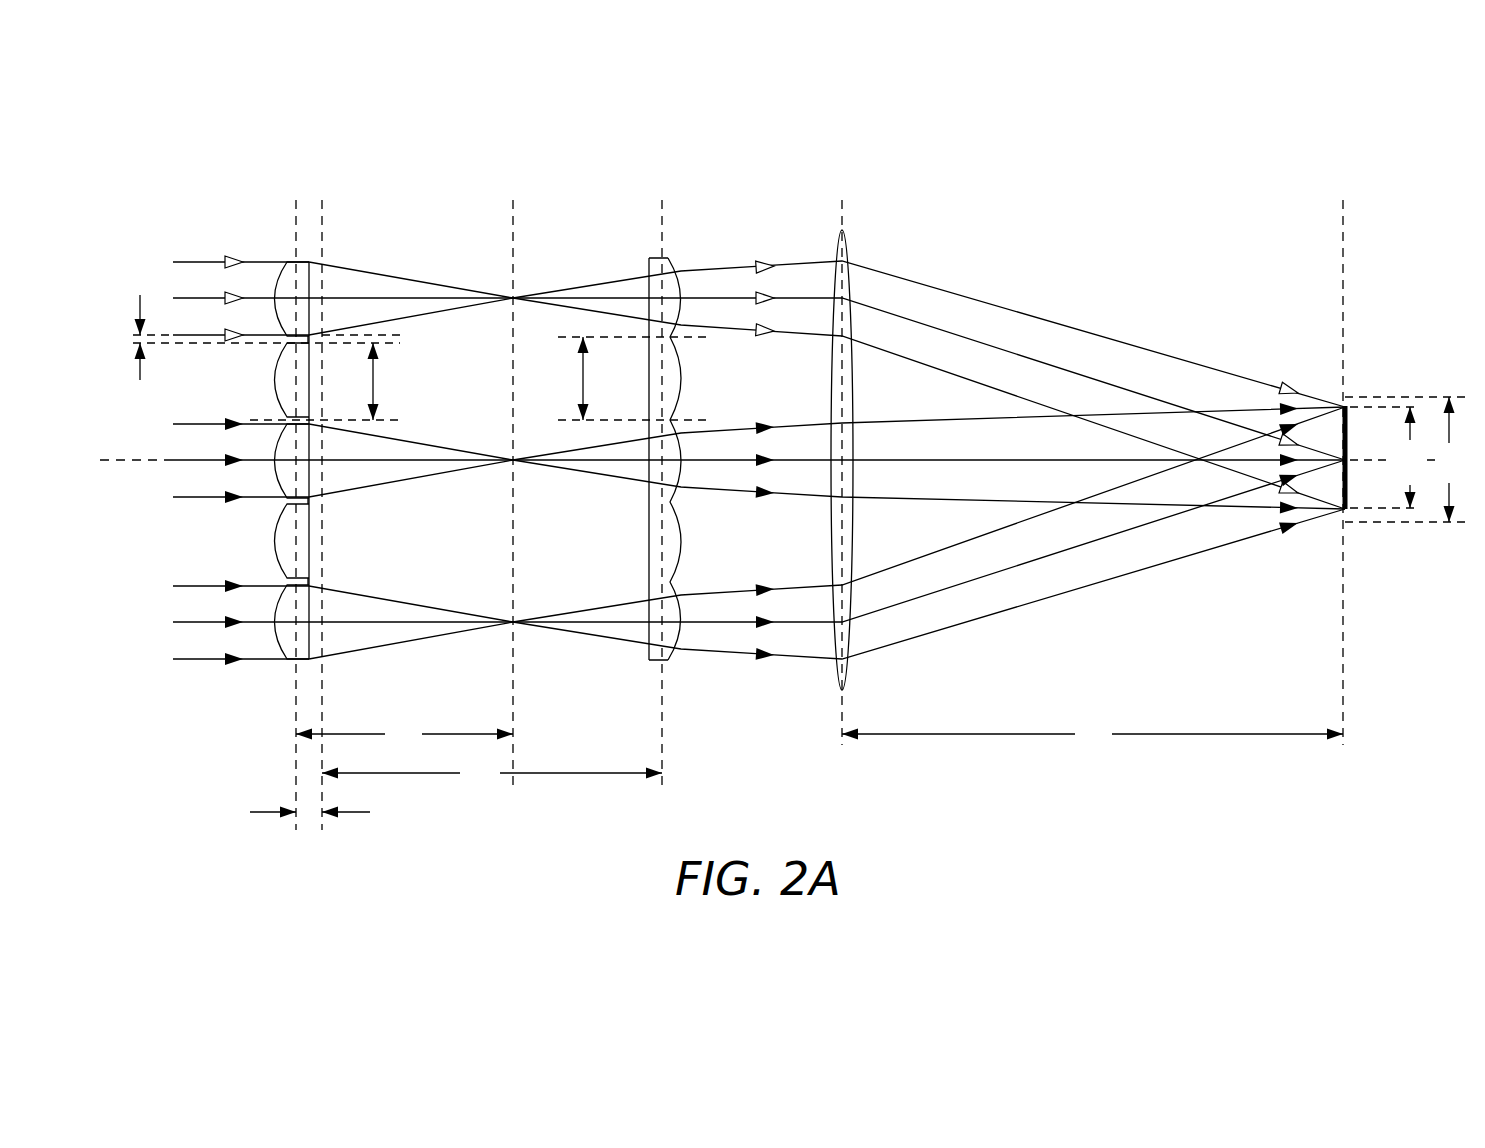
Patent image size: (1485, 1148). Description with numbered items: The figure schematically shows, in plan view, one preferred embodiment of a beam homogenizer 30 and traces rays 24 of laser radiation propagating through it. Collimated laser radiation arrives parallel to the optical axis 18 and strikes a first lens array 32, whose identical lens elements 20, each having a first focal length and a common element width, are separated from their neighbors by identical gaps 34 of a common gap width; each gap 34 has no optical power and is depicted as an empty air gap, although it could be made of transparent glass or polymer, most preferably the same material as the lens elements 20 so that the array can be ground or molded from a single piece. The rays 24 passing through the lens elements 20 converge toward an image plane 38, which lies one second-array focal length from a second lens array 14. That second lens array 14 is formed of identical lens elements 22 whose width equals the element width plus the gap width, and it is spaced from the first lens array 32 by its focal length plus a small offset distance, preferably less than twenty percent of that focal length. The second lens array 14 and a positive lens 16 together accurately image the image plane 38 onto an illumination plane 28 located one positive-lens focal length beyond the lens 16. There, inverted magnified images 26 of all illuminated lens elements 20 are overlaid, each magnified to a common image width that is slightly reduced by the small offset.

The second lens array 14 is at (690, 413).
The positive lens 16 is at (841, 232).
The optical axis 18 is at (123, 462).
The lens element 20 is at (283, 395).
The lens element 22 is at (672, 572).
The rays 24 is at (400, 296).
The inverted image 26 is at (1350, 412).
The illumination plane 28 is at (1340, 302).
The beam homogenizer 30 is at (1180, 178).
The first lens array 32 is at (310, 500).
The gap 34 is at (350, 509).
The image plane 38 is at (325, 228).